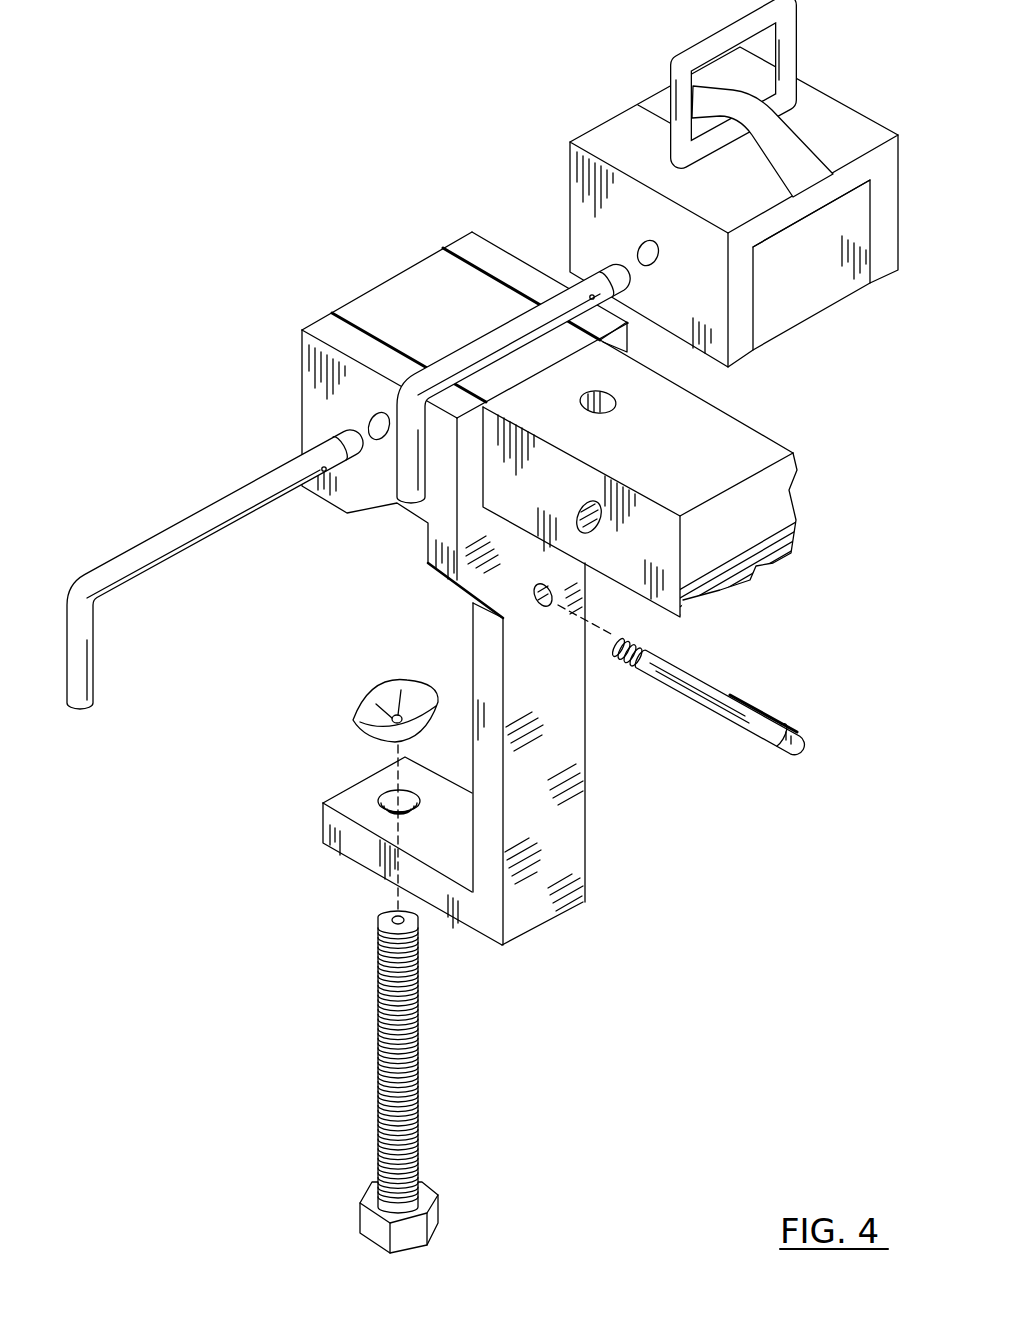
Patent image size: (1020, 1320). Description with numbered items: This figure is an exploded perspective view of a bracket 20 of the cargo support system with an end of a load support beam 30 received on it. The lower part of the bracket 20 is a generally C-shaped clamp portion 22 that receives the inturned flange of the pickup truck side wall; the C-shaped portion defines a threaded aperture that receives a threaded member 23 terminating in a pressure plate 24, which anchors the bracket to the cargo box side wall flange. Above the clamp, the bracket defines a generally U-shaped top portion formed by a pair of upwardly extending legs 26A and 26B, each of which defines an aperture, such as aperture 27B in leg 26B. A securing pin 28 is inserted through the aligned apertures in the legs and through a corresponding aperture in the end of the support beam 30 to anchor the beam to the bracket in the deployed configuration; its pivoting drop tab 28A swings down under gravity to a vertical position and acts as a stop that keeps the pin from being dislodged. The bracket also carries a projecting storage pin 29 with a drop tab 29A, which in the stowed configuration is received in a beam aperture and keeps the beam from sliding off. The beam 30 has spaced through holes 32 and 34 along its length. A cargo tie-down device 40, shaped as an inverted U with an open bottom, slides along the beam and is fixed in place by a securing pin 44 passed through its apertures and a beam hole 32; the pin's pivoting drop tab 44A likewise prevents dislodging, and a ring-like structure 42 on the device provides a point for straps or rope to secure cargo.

The bracket 20 is at (192, 363).
The C-shaped clamp portion 22 is at (568, 738).
The threaded member 23 is at (418, 1045).
The pressure plate 24 is at (387, 700).
The upwardly extending leg 26A is at (510, 270).
The upwardly extending leg 26B is at (308, 365).
The aperture 27B is at (380, 438).
The securing pin 28 is at (183, 530).
The pivoting drop tab 28A is at (333, 437).
The storage pin 29 is at (685, 672).
The drop tab 29A is at (802, 757).
The load support beam 30 is at (707, 470).
The through hole 32 is at (583, 505).
The through hole 34 is at (613, 400).
The cargo tie-down device 40 is at (607, 138).
The ring-like structure 42 is at (792, 38).
The securing pin 44 is at (465, 353).
The pivoting drop tab 44A is at (613, 278).